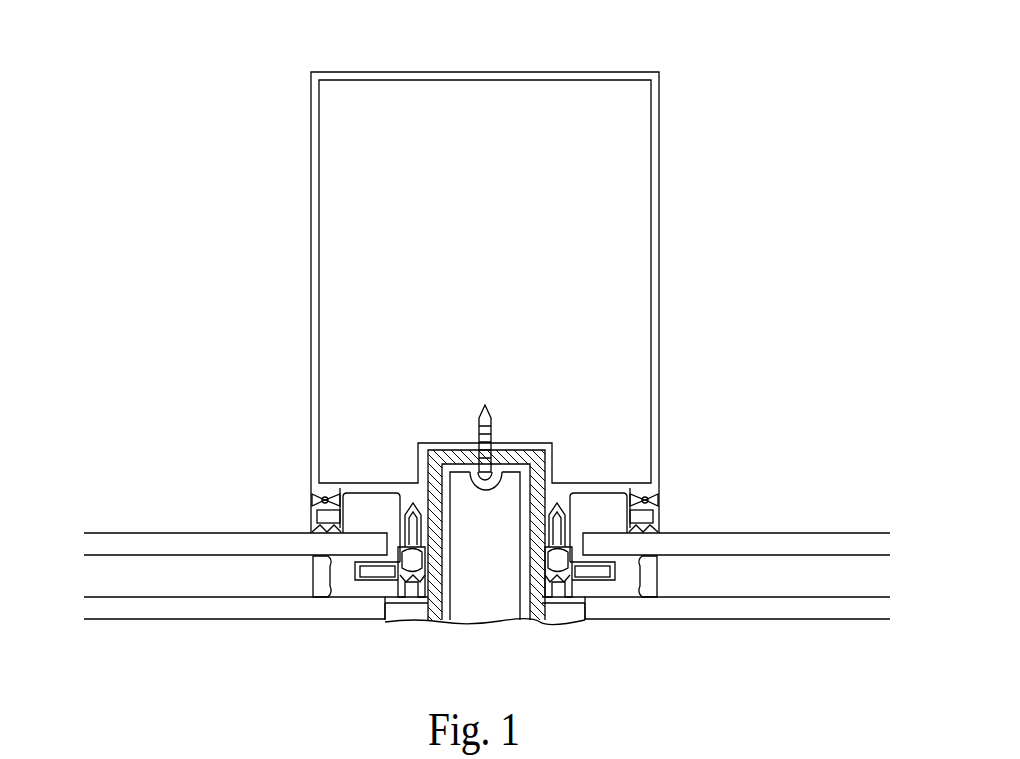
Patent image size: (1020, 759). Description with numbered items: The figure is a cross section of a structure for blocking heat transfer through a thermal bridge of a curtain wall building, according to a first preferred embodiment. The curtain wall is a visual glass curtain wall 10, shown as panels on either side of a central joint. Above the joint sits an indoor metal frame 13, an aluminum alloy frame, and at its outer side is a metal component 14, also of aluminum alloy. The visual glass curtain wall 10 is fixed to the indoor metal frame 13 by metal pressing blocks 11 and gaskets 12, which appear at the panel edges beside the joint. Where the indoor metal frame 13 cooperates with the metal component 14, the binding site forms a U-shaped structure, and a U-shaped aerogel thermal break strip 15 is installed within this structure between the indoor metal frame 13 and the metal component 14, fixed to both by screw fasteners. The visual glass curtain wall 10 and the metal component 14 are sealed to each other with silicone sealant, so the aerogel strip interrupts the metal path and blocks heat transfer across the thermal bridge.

The visual glass curtain wall 10 is at (237, 540).
The metal pressing block 11 is at (387, 570).
The gasket 12 is at (313, 530).
The indoor metal frame 13 is at (312, 350).
The metal component 14 is at (525, 563).
The aerogel thermal break strip 15 is at (442, 552).